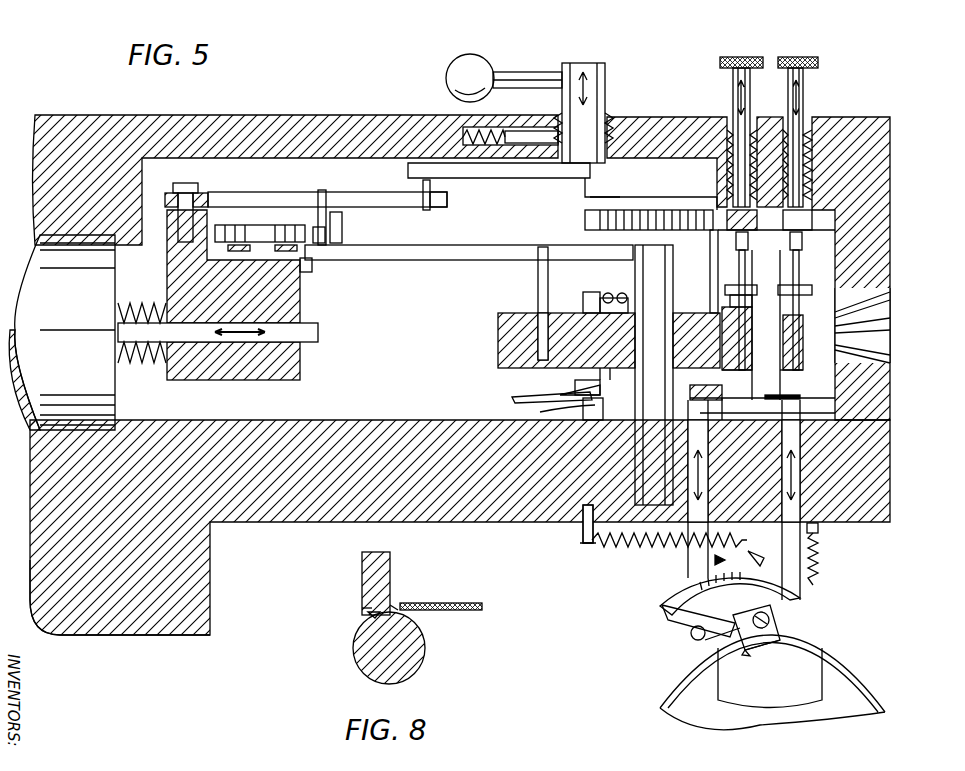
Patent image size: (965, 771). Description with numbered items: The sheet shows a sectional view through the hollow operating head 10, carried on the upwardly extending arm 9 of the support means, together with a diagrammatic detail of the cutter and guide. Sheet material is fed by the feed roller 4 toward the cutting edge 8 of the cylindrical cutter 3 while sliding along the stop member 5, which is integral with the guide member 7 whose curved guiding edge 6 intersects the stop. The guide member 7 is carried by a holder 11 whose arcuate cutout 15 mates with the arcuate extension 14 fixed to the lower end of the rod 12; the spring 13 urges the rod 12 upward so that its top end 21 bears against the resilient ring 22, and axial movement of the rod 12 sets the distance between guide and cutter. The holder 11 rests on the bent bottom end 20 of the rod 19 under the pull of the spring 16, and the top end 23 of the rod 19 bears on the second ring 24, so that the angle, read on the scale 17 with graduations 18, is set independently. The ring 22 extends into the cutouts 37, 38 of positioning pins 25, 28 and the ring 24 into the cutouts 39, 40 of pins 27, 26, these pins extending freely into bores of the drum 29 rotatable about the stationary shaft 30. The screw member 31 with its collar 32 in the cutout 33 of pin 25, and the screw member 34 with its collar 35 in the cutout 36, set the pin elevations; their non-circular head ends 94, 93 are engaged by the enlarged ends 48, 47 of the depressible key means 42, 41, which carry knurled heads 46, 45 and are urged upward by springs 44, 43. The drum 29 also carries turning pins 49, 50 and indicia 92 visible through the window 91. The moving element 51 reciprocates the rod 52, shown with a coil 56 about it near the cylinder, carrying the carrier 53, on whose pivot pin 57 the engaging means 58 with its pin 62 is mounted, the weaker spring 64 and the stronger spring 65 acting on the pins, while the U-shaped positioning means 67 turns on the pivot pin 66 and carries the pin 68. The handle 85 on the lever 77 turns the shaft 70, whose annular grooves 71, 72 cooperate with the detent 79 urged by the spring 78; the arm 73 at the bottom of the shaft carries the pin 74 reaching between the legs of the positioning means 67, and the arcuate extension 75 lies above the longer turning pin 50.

In FIG. 5, the cylindrical cutter 3 is at (665, 700).
In FIG. 8, the cylindrical cutter 3 is at (430, 612).
In FIG. 5, the feed roller 4 is at (725, 700).
In FIG. 8, the feed roller 4 is at (355, 640).
In FIG. 5, the stop member 5 is at (748, 649).
In FIG. 8, the stop member 5 is at (370, 617).
In FIG. 5, the curved guiding edge 6 is at (778, 636).
In FIG. 8, the curved guiding edge 6 is at (365, 610).
In FIG. 5, the guide member 7 is at (778, 610).
In FIG. 8, the guide member 7 is at (365, 578).
In FIG. 5, the cutting edge 8 is at (675, 682).
In FIG. 8, the cutting edge 8 is at (395, 608).
In FIG. 5, the upwardly extending arm 9 is at (205, 608).
In FIG. 5, the operating head 10 is at (890, 470).
In FIG. 5, the holder 11 is at (720, 630).
In FIG. 5, the rod 12 is at (818, 527).
In FIG. 5, the spring 13 is at (820, 560).
In FIG. 5, the arcuate extension 14 is at (785, 590).
In FIG. 5, the arcuate cutout 15 is at (670, 608).
In FIG. 5, the spring 16 is at (612, 540).
In FIG. 5, the scale 17 is at (690, 585).
In FIG. 5, the graduations 18 is at (710, 575).
In FIG. 5, the rod 19 is at (700, 408).
In FIG. 5, the bottom end 20 is at (690, 633).
In FIG. 5, the top end 21 is at (802, 440).
In FIG. 5, the ring 22 is at (800, 400).
In FIG. 5, the top end 23 is at (740, 378).
In FIG. 5, the ring 24 is at (540, 395).
In FIG. 5, the positioning pin 25 is at (792, 370).
In FIG. 5, the positioning pin 26 is at (616, 298).
In FIG. 5, the positioning pin 27 is at (730, 386).
In FIG. 5, the positioning pin 28 is at (585, 300).
In FIG. 5, the drum 29 is at (498, 345).
In FIG. 5, the stationary shaft 30 is at (662, 474).
In FIG. 5, the screw member 31 is at (855, 310).
In FIG. 5, the collar 32 is at (803, 335).
In FIG. 5, the cutout 33 is at (802, 282).
In FIG. 5, the screw member 34 is at (730, 301).
In FIG. 5, the collar 35 is at (725, 290).
In FIG. 5, the cutout 36 is at (740, 280).
In FIG. 5, the cutout 37 is at (780, 395).
In FIG. 5, the cutout 38 is at (560, 408).
In FIG. 5, the cutout 39 is at (718, 406).
In FIG. 5, the cutout 40 is at (585, 388).
In FIG. 5, the key means 41 is at (735, 80).
In FIG. 5, the key means 42 is at (805, 80).
In FIG. 5, the spring 43 is at (730, 140).
In FIG. 5, the spring 44 is at (805, 140).
In FIG. 5, the knurled head 45 is at (740, 57).
In FIG. 5, the knurled head 46 is at (820, 62).
In FIG. 5, the enlargement 47 is at (757, 230).
In FIG. 5, the enlarged end 48 is at (790, 230).
In FIG. 5, the turning pin 49 is at (538, 270).
In FIG. 5, the turning pin 50 is at (714, 240).
In FIG. 5, the element of moving means 51 is at (110, 400).
In FIG. 5, the rod 52 is at (318, 333).
In FIG. 5, the carrier 53 is at (300, 370).
In FIG. 5, the spring 56 is at (140, 308).
In FIG. 5, the pivot pin 57 is at (300, 300).
In FIG. 5, the engaging means 58 is at (383, 262).
In FIG. 5, the pin 62 is at (318, 228).
In FIG. 5, the spring 64 is at (305, 270).
In FIG. 5, the spring 65 is at (312, 232).
In FIG. 5, the pivot pin 66 is at (178, 186).
In FIG. 5, the positioning means 67 is at (230, 195).
In FIG. 5, the pin 68 is at (340, 225).
In FIG. 5, the shaft 70 is at (578, 72).
In FIG. 5, the annular groove 71 is at (612, 125).
In FIG. 5, the annular groove 72 is at (612, 137).
In FIG. 5, the arm 73 is at (568, 178).
In FIG. 5, the pin 74 is at (428, 210).
In FIG. 5, the arcuate extension 75 is at (600, 218).
In FIG. 5, the lever 77 is at (520, 88).
In FIG. 5, the spring 78 is at (485, 145).
In FIG. 5, the detent 79 is at (530, 143).
In FIG. 5, the handle 85 is at (447, 77).
In FIG. 5, the window 91 is at (875, 330).
In FIG. 5, the indicia 92 is at (885, 355).
In FIG. 5, the head end 93 is at (748, 250).
In FIG. 5, the head end 94 is at (797, 250).